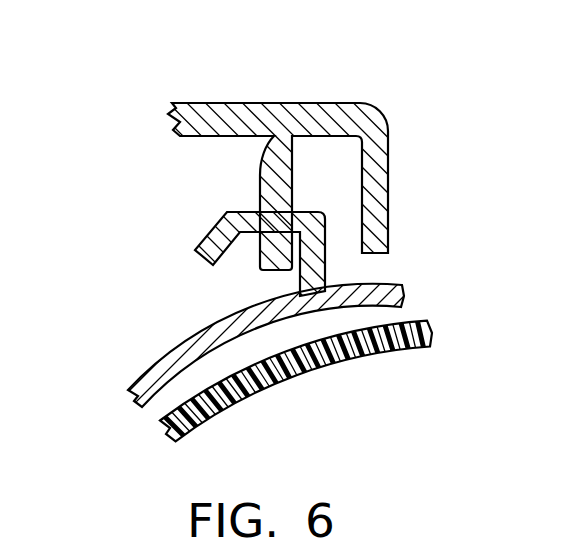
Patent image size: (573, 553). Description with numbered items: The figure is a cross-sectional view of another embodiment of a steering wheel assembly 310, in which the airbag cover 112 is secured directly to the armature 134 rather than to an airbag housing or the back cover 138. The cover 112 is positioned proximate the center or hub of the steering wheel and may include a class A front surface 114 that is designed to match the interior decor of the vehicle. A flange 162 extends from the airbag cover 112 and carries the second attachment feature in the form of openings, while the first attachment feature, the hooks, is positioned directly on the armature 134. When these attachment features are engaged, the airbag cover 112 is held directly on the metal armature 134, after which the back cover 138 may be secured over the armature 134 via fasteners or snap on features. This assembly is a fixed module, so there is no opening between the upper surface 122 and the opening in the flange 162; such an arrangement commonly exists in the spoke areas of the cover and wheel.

The airbag cover 112 is at (213, 118).
The front surface 114 is at (253, 103).
The flange 162 is at (272, 183).
The upper surface 122 is at (240, 212).
The steering wheel assembly 310 is at (208, 212).
The armature 134 is at (177, 353).
The back cover 138 is at (333, 366).